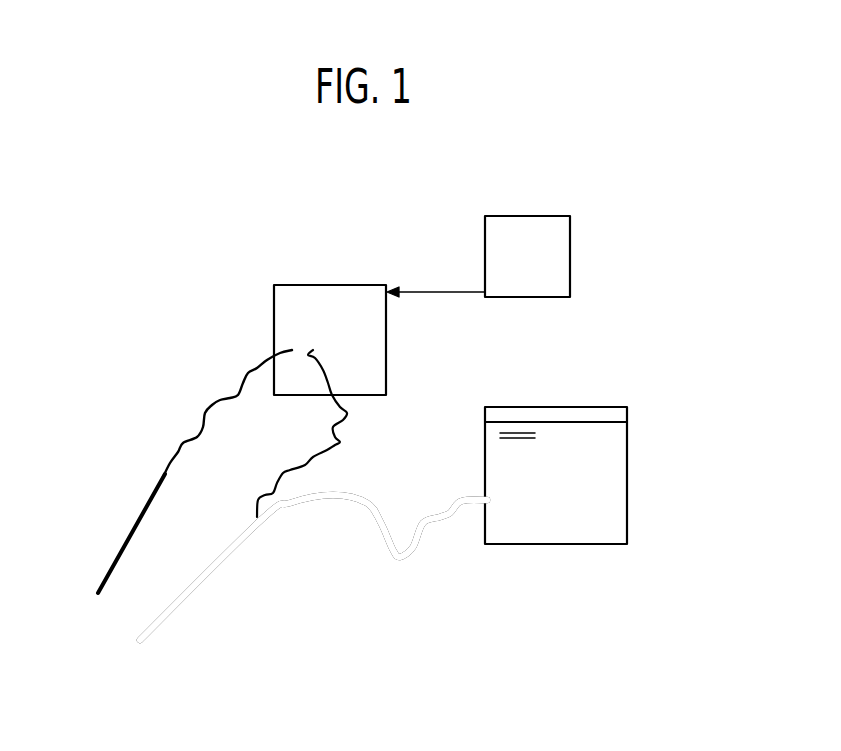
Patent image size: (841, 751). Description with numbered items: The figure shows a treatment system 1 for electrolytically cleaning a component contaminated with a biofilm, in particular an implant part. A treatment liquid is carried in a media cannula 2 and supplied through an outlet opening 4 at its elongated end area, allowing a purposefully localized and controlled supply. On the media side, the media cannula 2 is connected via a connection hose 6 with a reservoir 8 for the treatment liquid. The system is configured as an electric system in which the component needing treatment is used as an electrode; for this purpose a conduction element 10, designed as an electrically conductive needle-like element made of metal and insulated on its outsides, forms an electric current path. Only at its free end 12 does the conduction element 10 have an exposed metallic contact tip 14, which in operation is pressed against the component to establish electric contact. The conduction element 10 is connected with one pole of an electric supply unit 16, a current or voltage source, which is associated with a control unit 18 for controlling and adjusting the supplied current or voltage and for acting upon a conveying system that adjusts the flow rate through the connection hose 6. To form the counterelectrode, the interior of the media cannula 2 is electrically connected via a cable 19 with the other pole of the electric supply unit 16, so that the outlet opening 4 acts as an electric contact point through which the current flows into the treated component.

The treatment system 1 is at (650, 284).
The media cannula 2 is at (311, 606).
The outlet opening 4 is at (140, 646).
The connection hose 6 is at (400, 560).
The reservoir 8 is at (628, 477).
The conduction element 10 is at (167, 506).
The free end 12 is at (98, 582).
The contact tip 14 is at (98, 596).
The electric supply unit 16 is at (333, 284).
The control unit 18 is at (530, 215).
The cable 19 is at (348, 440).